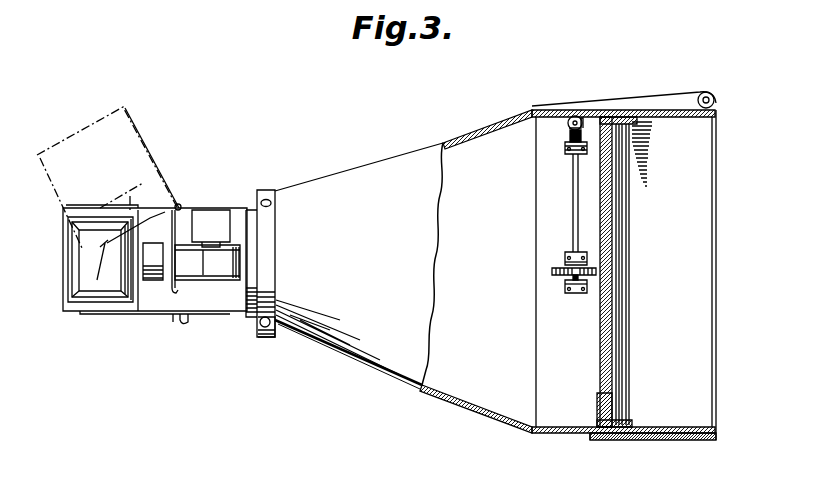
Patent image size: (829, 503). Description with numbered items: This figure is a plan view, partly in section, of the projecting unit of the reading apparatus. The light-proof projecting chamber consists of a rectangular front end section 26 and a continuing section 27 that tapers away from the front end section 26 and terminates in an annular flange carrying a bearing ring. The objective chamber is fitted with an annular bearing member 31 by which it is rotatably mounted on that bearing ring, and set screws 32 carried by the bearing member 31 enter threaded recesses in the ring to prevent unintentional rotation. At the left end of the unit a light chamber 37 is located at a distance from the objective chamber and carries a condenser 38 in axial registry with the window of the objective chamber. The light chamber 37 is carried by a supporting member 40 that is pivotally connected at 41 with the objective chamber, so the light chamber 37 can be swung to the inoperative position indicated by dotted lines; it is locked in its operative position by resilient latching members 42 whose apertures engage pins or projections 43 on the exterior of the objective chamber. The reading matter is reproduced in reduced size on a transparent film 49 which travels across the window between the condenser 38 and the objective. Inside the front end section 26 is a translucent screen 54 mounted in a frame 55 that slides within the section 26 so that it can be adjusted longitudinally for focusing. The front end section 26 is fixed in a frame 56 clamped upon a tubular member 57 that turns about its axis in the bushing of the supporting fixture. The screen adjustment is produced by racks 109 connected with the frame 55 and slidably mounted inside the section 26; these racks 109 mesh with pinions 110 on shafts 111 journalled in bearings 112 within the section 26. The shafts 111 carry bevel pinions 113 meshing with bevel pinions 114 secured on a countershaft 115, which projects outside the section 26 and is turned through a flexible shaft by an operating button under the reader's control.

The front end section 26 is at (561, 434).
The continuing section 27 is at (456, 403).
The annular bearing member 31 is at (273, 258).
The set screws 32 is at (266, 338).
The light chamber 37 is at (83, 280).
The condenser 38 is at (155, 283).
The supporting member 40 is at (108, 242).
The pivotal connection 41 is at (181, 207).
The resilient latching members 42 is at (174, 322).
The pins or projections 43 is at (184, 326).
The transparent film 49 is at (213, 262).
The screen 54 is at (608, 316).
The frame 55 is at (627, 241).
The frame 56 is at (630, 440).
The tubular member 57 is at (716, 97).
The racks 109 is at (553, 272).
The pinions 110 is at (567, 278).
The shafts 111 is at (572, 204).
The bearings 112 is at (566, 144).
The bevel pinions 113 is at (569, 136).
The bevel pinions 114 is at (571, 117).
The countershaft 115 is at (580, 118).